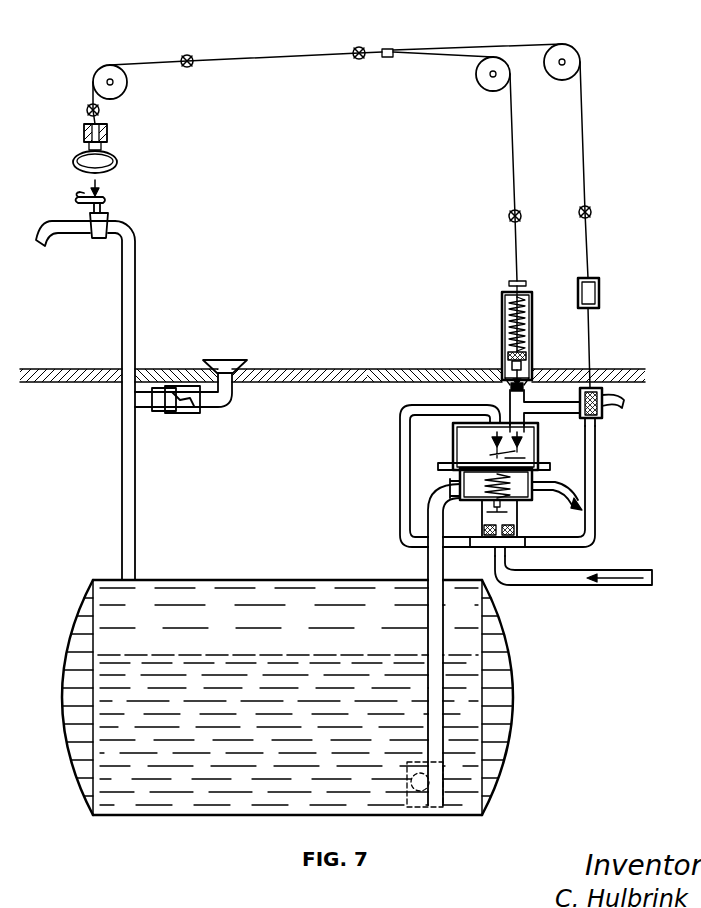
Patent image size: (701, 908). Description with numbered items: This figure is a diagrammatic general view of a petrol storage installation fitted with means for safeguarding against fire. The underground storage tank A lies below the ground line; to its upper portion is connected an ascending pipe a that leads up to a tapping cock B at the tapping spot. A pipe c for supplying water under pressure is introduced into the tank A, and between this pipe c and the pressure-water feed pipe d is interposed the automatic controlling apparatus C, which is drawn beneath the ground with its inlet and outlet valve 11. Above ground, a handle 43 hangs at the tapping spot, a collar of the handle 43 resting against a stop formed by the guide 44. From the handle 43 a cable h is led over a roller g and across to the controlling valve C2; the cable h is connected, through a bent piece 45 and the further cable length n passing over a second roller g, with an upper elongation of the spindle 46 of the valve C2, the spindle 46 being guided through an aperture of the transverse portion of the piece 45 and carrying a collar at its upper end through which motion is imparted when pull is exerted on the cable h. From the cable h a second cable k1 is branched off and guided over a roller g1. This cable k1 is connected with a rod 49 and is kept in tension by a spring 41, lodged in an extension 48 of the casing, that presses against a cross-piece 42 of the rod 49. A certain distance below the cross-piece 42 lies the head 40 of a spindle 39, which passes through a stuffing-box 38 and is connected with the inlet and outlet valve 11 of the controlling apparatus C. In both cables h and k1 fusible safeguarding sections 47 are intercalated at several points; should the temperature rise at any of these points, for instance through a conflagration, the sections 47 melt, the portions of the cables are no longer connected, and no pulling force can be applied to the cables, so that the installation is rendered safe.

The fusible safeguarding section 47 is at (188, 55).
The roller g is at (127, 86).
The roller g1 is at (487, 78).
The cable h is at (265, 63).
The second cable k1 is at (510, 175).
The cable n is at (586, 160).
The guide 44 is at (84, 133).
The handle 43 is at (118, 160).
The tapping cock B is at (94, 219).
The ascending pipe a is at (136, 527).
The bent piece 45 is at (600, 291).
The spindle 46 is at (591, 349).
The extension of the casing 48 is at (502, 330).
The rod 49 is at (508, 302).
The piston rod 41 is at (520, 332).
The cross-piece 42 is at (527, 357).
The head of spindle 40 is at (512, 366).
The spindle 39 is at (522, 376).
The stuffing-box 38 is at (524, 388).
The controlling valve C2 is at (619, 407).
The automatic controlling apparatus C is at (453, 447).
The inlet and outlet valve 11 is at (522, 443).
The underground storage tank A is at (185, 590).
The pipe c is at (428, 563).
The pressure-water feed pipe d is at (612, 588).